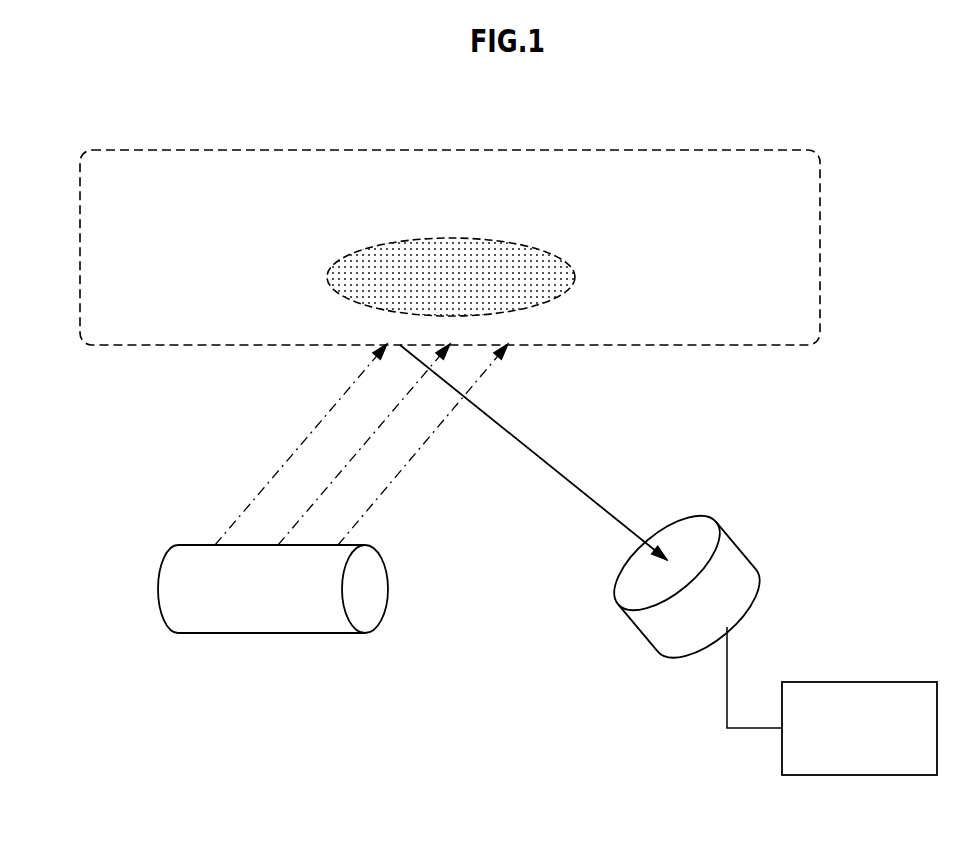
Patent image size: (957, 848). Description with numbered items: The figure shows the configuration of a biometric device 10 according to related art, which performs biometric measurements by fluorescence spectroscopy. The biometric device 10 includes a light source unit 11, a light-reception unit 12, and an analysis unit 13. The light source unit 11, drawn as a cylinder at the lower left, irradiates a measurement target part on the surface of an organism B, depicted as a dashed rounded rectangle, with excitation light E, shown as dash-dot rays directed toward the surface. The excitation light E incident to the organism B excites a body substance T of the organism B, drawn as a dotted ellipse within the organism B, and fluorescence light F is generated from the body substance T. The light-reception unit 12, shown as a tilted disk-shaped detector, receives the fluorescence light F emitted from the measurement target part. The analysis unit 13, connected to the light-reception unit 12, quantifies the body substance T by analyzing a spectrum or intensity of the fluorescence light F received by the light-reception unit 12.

The organism B is at (617, 149).
The body substance T is at (580, 238).
The excitation light E is at (291, 455).
The fluorescence light F is at (587, 462).
The biometric device 10 is at (448, 700).
The light source unit 11 is at (258, 633).
The light-reception unit 12 is at (647, 637).
The analysis unit 13 is at (855, 775).